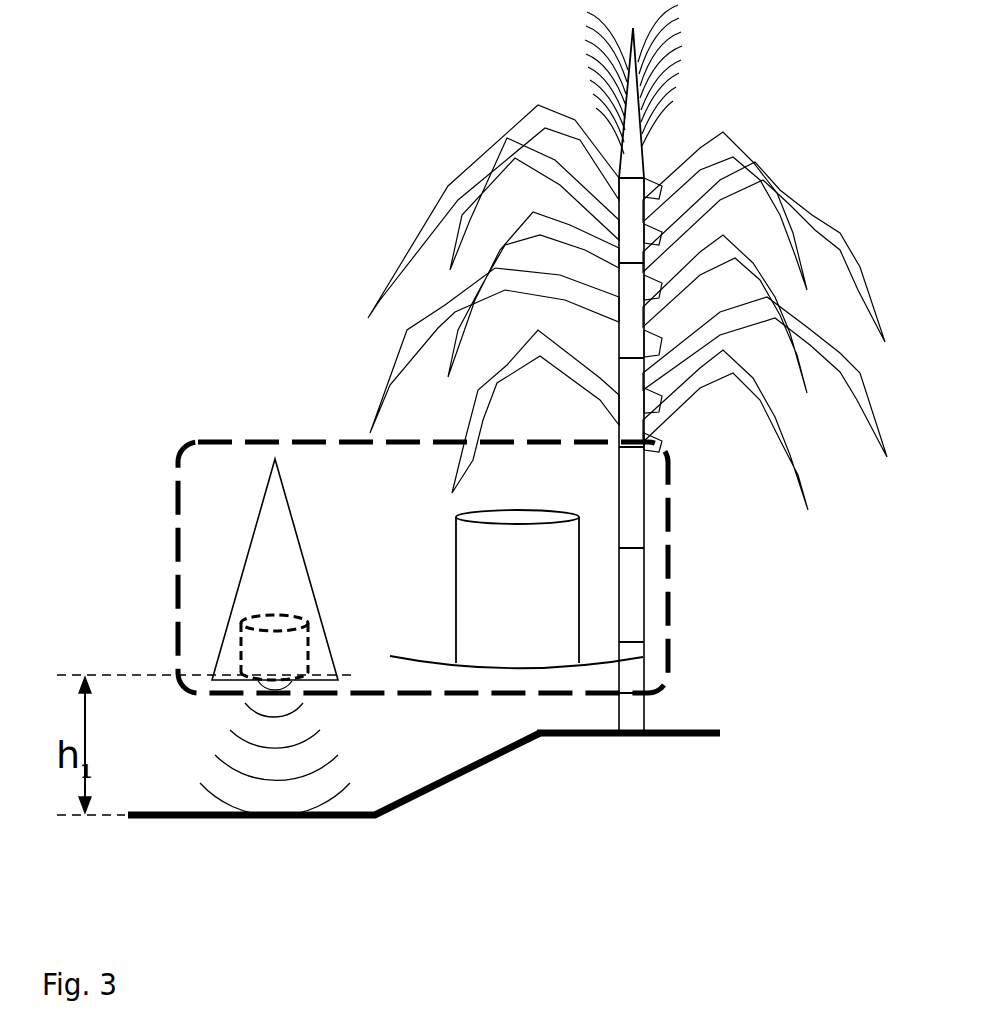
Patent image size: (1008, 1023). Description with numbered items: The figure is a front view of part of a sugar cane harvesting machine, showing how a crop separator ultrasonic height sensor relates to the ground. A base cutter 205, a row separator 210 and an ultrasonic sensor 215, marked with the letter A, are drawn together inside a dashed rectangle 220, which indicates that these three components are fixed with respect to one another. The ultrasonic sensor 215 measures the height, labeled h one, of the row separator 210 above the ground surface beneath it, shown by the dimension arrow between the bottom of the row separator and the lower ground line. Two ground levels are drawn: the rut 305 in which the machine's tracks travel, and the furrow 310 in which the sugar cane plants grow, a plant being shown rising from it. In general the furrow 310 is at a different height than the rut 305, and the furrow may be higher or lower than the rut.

The base cutter 205 is at (537, 602).
The row separator 210 is at (293, 577).
The ultrasonic sensor 215 is at (300, 648).
The dashed rectangle 220 is at (177, 500).
The rut 305 is at (272, 820).
The furrow 310 is at (651, 738).